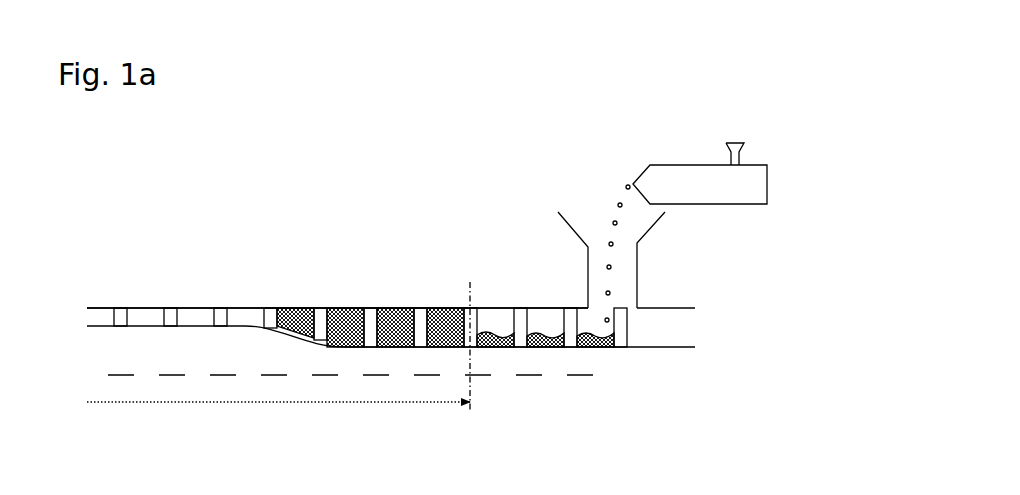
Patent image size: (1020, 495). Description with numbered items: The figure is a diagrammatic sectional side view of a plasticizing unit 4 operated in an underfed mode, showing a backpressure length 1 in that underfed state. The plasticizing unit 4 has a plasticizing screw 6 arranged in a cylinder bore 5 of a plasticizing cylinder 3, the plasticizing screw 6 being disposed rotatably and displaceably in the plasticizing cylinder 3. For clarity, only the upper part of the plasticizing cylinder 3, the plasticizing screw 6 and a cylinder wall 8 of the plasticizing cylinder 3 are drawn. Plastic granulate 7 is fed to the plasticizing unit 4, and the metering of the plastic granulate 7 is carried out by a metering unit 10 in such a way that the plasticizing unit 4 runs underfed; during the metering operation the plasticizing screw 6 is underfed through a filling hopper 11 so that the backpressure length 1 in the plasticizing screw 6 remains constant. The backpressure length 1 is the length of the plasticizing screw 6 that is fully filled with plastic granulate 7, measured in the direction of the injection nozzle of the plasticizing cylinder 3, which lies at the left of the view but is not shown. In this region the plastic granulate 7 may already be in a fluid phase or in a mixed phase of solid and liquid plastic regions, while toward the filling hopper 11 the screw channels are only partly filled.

The backpressure length 1 is at (341, 347).
The plasticizing cylinder 3 is at (185, 292).
The plasticizing unit 4 is at (485, 242).
The cylinder bore 5 is at (700, 332).
The plasticizing screw 6 is at (165, 320).
The plastic granulate 7 is at (618, 227).
The cylinder wall 8 is at (237, 308).
The metering unit 10 is at (683, 182).
The filling hopper 11 is at (650, 237).